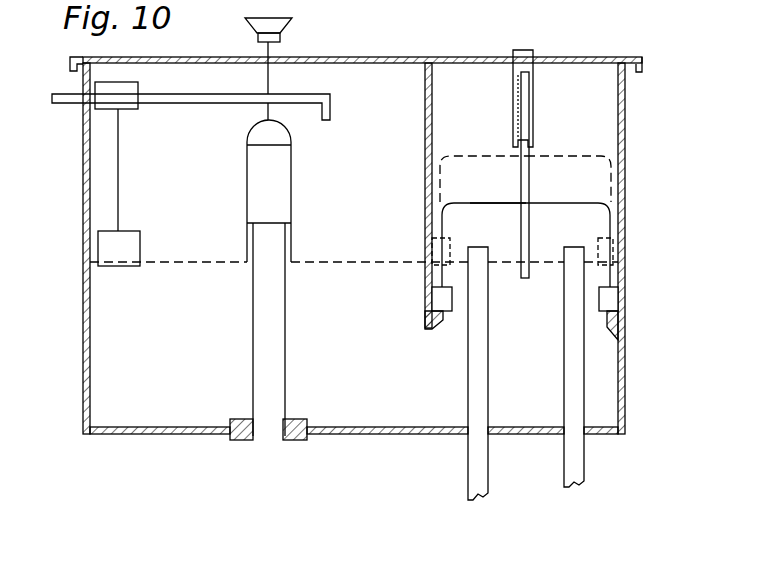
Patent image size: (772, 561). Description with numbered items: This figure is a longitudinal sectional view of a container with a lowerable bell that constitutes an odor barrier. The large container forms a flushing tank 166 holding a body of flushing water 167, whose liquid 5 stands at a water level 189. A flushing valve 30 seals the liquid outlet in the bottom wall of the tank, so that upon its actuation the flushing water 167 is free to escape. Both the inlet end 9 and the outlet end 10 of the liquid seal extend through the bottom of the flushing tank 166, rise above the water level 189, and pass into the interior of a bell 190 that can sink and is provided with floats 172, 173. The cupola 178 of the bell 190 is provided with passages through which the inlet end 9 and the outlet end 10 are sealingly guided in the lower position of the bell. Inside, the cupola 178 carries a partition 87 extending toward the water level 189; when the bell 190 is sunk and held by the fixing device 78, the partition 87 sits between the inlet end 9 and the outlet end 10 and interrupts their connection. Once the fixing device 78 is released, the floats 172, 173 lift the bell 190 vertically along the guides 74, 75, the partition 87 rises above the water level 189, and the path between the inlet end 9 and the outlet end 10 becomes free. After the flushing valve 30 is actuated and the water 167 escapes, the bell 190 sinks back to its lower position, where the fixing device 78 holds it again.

The liquid 5 is at (183, 355).
The inlet end 9 is at (577, 464).
The outlet end 10 is at (480, 470).
The flushing valve 30 is at (268, 420).
The guide 74 is at (437, 275).
The guide 75 is at (612, 277).
The fixing device 78 is at (534, 89).
The partition 87 is at (561, 228).
The flushing tank 166 is at (626, 368).
The flushing water 167 is at (372, 410).
The float 172 is at (437, 300).
The float 173 is at (613, 300).
The cupola 178 is at (496, 203).
The water level 189 is at (163, 262).
The bell 190 is at (604, 204).